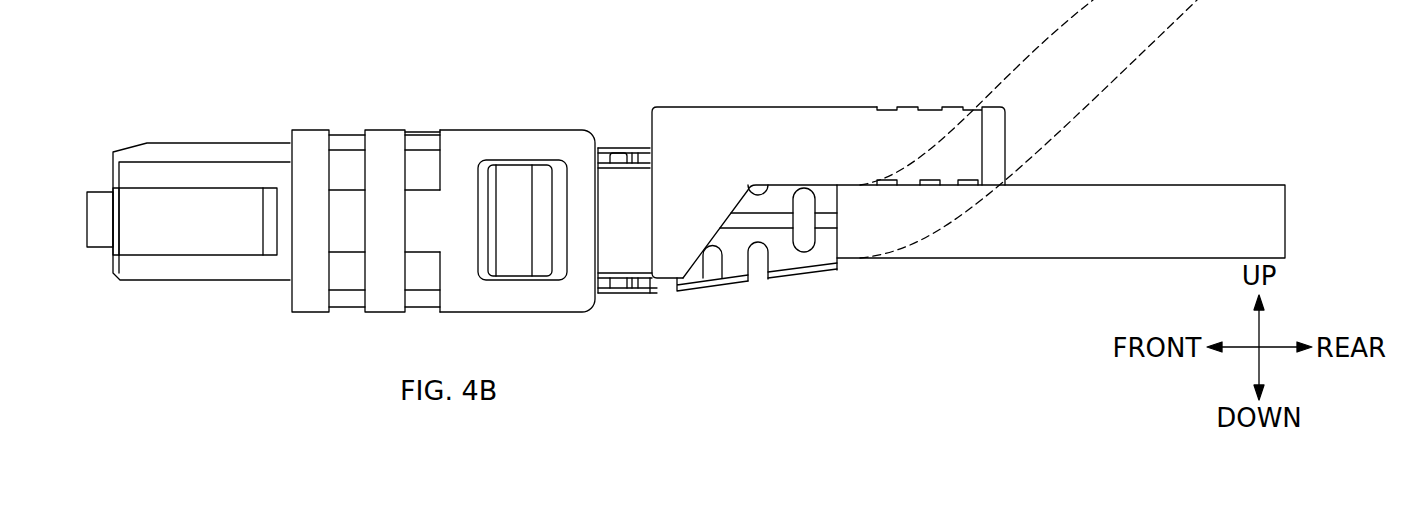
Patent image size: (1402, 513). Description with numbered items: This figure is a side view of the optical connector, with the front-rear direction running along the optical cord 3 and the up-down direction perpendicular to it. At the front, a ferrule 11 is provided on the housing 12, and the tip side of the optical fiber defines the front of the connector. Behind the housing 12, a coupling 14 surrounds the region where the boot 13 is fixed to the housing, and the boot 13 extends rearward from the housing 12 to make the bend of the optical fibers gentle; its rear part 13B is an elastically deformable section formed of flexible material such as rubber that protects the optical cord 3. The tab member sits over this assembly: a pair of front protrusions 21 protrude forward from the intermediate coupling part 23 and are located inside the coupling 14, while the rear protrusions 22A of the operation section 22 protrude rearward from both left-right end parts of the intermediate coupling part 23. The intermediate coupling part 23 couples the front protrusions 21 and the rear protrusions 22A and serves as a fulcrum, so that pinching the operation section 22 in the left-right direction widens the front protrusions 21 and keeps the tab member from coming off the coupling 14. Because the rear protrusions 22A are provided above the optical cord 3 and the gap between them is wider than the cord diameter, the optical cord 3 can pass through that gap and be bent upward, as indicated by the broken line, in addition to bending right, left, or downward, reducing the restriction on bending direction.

The optical cord 3 is at (1260, 185).
The ferrule 11 is at (100, 193).
The housing 12 is at (198, 152).
The boot 13 is at (737, 179).
The rear part 13B is at (732, 285).
The coupling 14 is at (386, 137).
The front protrusions 21 is at (615, 263).
The operation section 22 is at (828, 160).
The rear protrusions 22A is at (912, 112).
The intermediate coupling part 23 is at (722, 112).